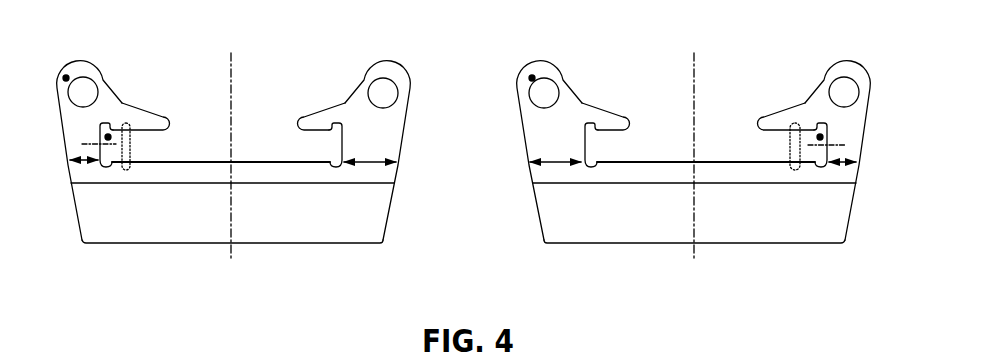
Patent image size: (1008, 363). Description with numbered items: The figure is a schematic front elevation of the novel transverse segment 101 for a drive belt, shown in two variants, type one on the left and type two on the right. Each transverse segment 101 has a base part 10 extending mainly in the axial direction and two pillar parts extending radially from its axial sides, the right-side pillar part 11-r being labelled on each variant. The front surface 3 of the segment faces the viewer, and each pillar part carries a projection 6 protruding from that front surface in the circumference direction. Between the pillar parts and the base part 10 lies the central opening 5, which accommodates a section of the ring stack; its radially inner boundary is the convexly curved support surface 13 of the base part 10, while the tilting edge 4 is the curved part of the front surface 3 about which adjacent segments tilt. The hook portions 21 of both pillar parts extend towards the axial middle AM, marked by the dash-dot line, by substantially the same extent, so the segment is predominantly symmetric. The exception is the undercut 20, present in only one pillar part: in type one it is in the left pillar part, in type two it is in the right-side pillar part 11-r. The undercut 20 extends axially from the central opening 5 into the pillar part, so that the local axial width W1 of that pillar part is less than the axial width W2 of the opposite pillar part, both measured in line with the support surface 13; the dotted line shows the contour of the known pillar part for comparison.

The front surface 3 is at (66, 75).
The projection 6 is at (83, 84).
The right-side pillar part 11-r is at (353, 98).
The hook portion 21 is at (143, 117).
The undercut 20 is at (108, 137).
The central opening 5 is at (269, 157).
The base part 10 is at (132, 232).
The support surface 13 is at (183, 164).
The tilting edge 4 is at (218, 185).
The transverse segment 101 is at (285, 245).
The axial width of the pillar part with the undercut W1 is at (82, 164).
The axial width of the opposite pillar part W2 is at (368, 163).
The axial middle AM is at (459, 146).